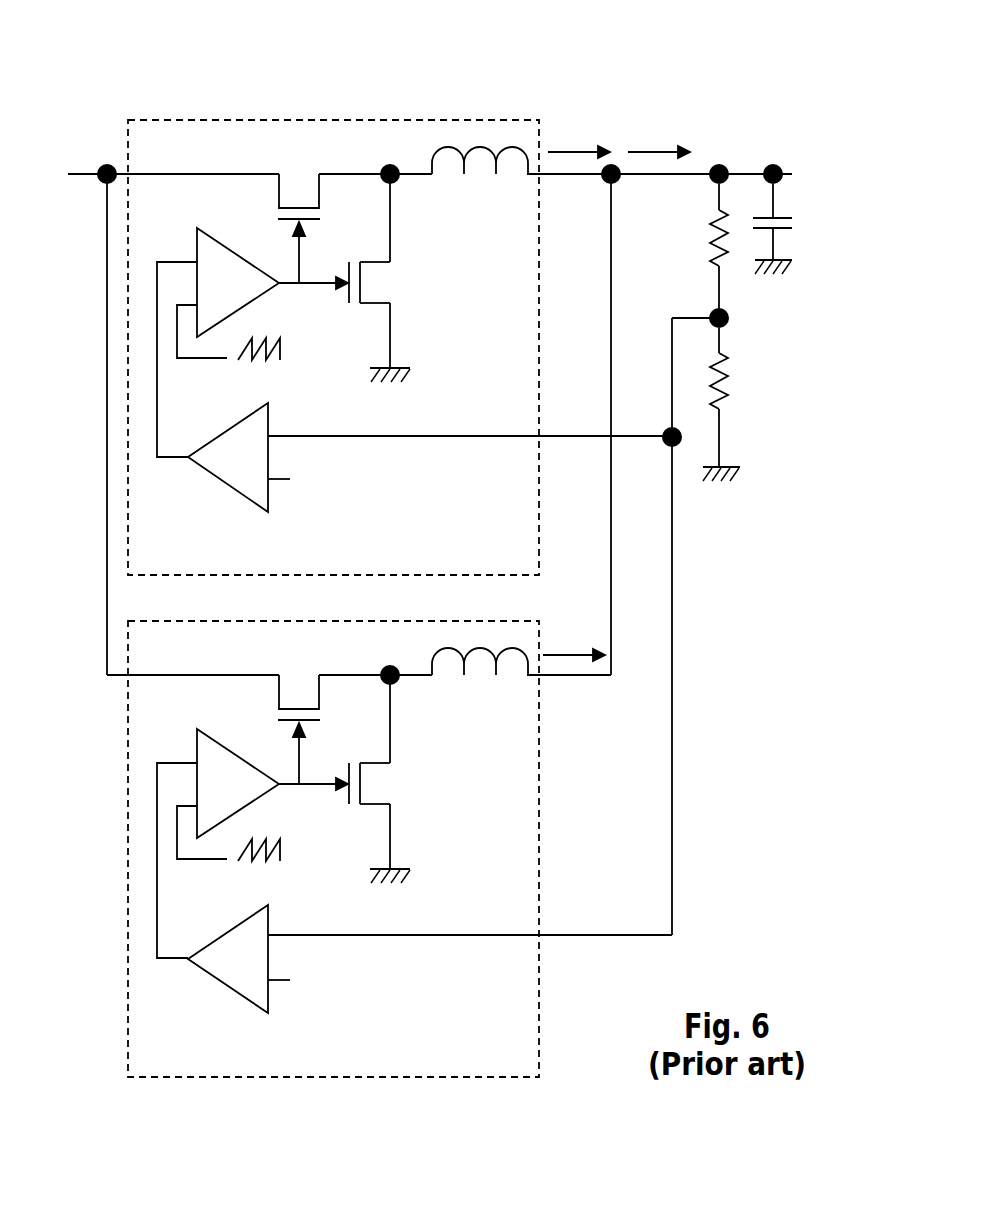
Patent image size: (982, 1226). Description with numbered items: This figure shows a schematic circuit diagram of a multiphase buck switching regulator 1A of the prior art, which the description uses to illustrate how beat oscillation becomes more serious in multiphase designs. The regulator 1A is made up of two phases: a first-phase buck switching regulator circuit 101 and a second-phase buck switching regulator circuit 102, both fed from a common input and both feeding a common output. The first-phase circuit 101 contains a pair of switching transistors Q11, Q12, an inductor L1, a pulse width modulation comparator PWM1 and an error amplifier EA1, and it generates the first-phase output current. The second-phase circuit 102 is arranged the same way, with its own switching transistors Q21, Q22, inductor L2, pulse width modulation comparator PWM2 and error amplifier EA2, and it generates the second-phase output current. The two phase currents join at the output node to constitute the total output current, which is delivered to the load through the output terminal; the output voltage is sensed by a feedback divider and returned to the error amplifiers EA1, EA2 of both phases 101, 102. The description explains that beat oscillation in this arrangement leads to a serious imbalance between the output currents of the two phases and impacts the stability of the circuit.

The multi-phase DC-DC converter (prior art) 1A is at (195, 93).
The first converter channel 101 is at (503, 536).
The second converter channel 102 is at (505, 1049).
The first high-side switching transistor Q11 is at (303, 210).
The first low-side switching transistor Q12 is at (394, 278).
The first inductor L1 is at (480, 185).
The first PWM comparator PWM1 is at (253, 294).
The first error amplifier EA1 is at (261, 471).
The second high-side switching transistor Q21 is at (303, 711).
The second low-side switching transistor Q22 is at (394, 779).
The second inductor L2 is at (480, 686).
The second PWM comparator PWM2 is at (253, 795).
The second error amplifier EA2 is at (261, 972).